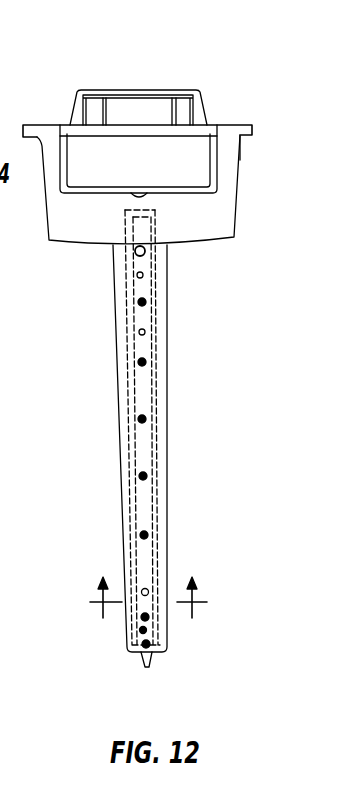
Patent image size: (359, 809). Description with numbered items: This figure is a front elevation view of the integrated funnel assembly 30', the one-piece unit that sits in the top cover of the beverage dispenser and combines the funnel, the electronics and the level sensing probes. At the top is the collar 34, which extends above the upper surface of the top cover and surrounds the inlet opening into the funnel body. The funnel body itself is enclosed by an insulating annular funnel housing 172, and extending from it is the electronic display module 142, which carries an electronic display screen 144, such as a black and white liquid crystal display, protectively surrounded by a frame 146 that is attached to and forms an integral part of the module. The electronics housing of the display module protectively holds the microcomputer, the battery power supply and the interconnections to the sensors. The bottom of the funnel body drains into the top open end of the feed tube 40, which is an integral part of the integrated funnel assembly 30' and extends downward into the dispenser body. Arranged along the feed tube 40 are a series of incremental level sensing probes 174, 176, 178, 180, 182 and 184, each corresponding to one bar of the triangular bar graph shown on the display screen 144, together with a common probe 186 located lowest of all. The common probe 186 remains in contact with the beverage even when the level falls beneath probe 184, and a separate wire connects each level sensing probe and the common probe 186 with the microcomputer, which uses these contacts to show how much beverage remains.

The integrated funnel assembly 30' is at (170, 84).
The collar 34 is at (72, 99).
The electronic display module 142 is at (171, 142).
The electronic display screen 144 is at (216, 182).
The frame 146 is at (220, 157).
The insulating annular funnel housing 172 is at (222, 213).
The feed tube 40 is at (167, 407).
The incremental level sensing probe 174 is at (138, 302).
The incremental level sensing probe 176 is at (138, 362).
The incremental level sensing probe 178 is at (139, 419).
The incremental level sensing probe 180 is at (140, 476).
The incremental level sensing probe 182 is at (141, 535).
The incremental level sensing probe 184 is at (140, 631).
The common probe 186 is at (167, 649).